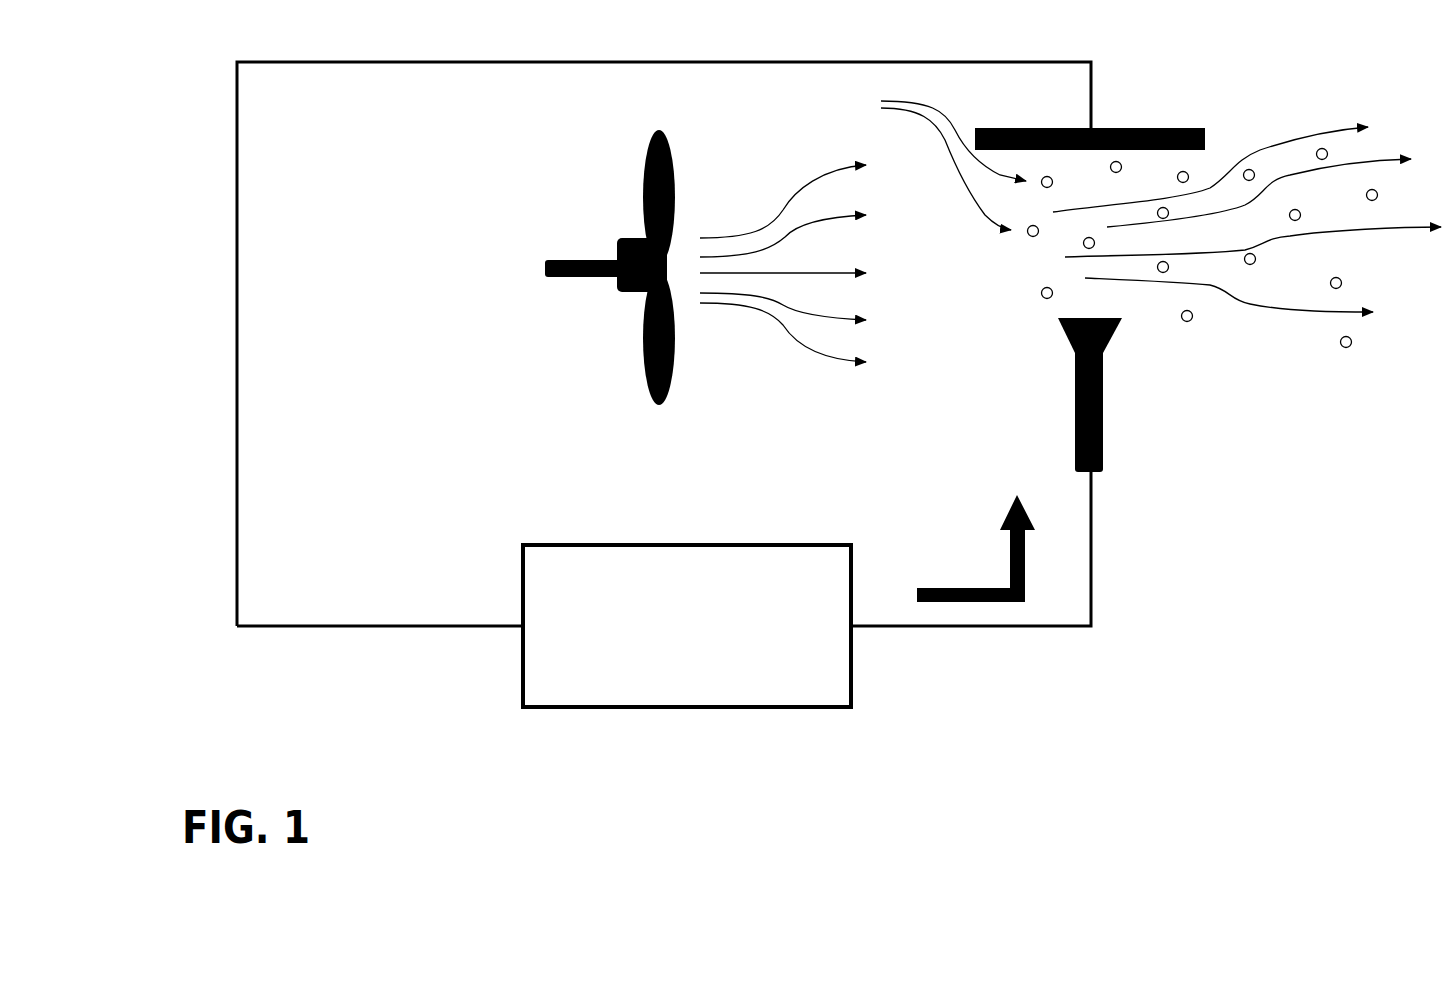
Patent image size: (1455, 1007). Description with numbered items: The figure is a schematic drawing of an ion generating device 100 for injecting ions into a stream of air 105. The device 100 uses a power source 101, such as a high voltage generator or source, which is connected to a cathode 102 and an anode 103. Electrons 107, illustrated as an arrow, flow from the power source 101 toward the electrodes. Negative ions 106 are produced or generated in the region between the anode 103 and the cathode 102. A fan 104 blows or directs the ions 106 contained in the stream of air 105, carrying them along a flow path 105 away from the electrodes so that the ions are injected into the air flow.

The ion generating device 100 is at (193, 624).
The power source 101 is at (865, 662).
The cathode 102 is at (1138, 113).
The anode 103 is at (1129, 362).
The fan 104 is at (605, 222).
The stream of air 105 is at (1308, 258).
The negative ions 106 is at (926, 161).
The electrons 107 is at (986, 555).